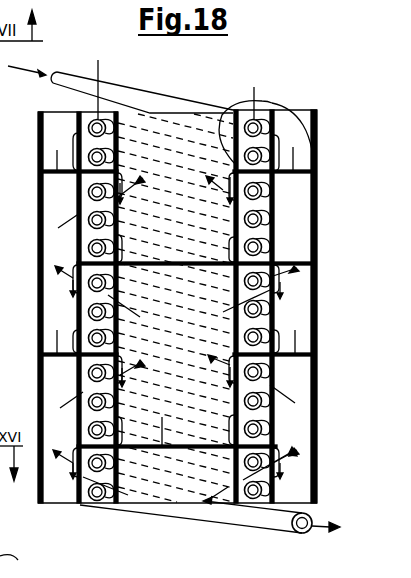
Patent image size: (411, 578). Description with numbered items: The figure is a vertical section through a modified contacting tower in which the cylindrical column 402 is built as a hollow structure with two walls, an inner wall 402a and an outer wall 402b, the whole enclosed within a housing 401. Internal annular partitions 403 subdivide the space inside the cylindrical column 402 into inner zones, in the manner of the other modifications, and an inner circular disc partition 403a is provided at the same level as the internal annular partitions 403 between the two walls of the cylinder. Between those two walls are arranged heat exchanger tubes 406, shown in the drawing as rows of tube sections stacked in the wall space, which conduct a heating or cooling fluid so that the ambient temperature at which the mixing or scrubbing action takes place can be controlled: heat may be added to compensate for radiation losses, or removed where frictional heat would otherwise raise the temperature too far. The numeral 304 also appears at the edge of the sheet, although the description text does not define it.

The heat exchanger section 304 is at (19, 566).
The housing 401 is at (318, 143).
The cylindrical column 402 is at (283, 115).
The inner wall of the cylinder 402a is at (232, 100).
The outer wall of the cylinder 402b is at (306, 115).
The internal annular partitions 403 is at (270, 248).
The inner circular disc partition 403a is at (183, 230).
The heat exchanger tubes 406 is at (112, 82).